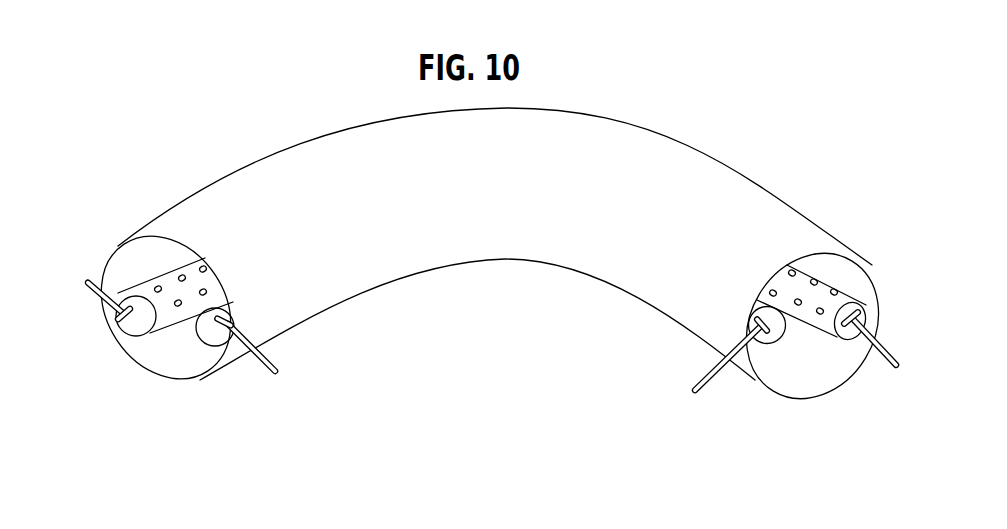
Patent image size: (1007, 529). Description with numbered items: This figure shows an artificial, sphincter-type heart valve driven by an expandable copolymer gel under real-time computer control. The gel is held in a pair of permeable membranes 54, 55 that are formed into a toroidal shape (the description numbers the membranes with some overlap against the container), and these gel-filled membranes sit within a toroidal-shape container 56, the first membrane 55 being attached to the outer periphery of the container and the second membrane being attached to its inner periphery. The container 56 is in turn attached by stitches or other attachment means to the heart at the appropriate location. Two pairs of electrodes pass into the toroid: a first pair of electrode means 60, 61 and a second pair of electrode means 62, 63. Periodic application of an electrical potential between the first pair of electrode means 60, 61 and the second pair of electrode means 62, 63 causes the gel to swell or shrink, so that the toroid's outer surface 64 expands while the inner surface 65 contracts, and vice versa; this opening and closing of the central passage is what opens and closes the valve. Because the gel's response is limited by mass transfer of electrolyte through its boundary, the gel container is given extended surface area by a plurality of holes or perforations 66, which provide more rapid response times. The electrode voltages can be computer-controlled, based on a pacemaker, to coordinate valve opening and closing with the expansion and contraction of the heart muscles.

The tube end opening 54 is at (140, 336).
The first permeable membrane 55 is at (212, 340).
The toroidal-shape container 56 is at (736, 173).
The first pair of electrode means 60 is at (268, 374).
The first pair of electrode means 61 is at (712, 376).
The second pair of electrode means 62 is at (90, 280).
The second pair of electrode means 63 is at (873, 352).
The outer surface 64 is at (131, 350).
The inner surface 65 is at (230, 316).
The holes or perforations 66 is at (160, 273).